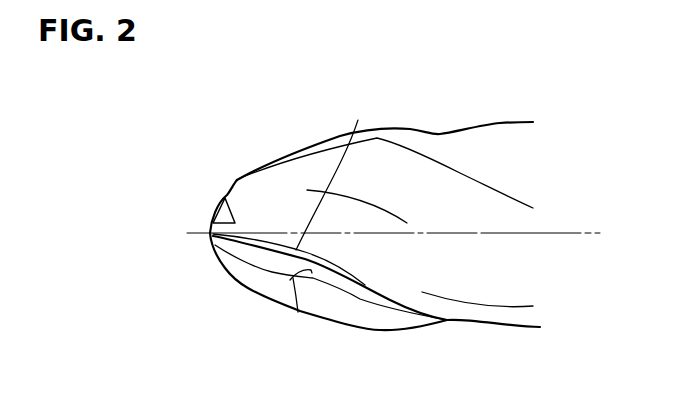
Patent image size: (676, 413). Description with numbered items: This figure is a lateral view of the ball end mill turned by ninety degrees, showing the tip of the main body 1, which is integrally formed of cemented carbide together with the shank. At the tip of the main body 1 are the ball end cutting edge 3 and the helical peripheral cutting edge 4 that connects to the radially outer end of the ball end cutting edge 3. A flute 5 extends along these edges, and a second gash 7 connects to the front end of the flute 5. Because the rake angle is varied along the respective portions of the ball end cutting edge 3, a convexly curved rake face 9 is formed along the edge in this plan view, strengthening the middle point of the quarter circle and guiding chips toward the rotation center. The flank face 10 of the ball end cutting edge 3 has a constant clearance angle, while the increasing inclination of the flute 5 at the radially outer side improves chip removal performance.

The main body 1 is at (519, 123).
The ball end cutting edge 3 is at (275, 249).
The peripheral cutting edge 4 is at (390, 300).
The flute 5 is at (278, 215).
The second gash 7 is at (223, 210).
The rake face 9 is at (328, 205).
The flank face 10 is at (250, 250).